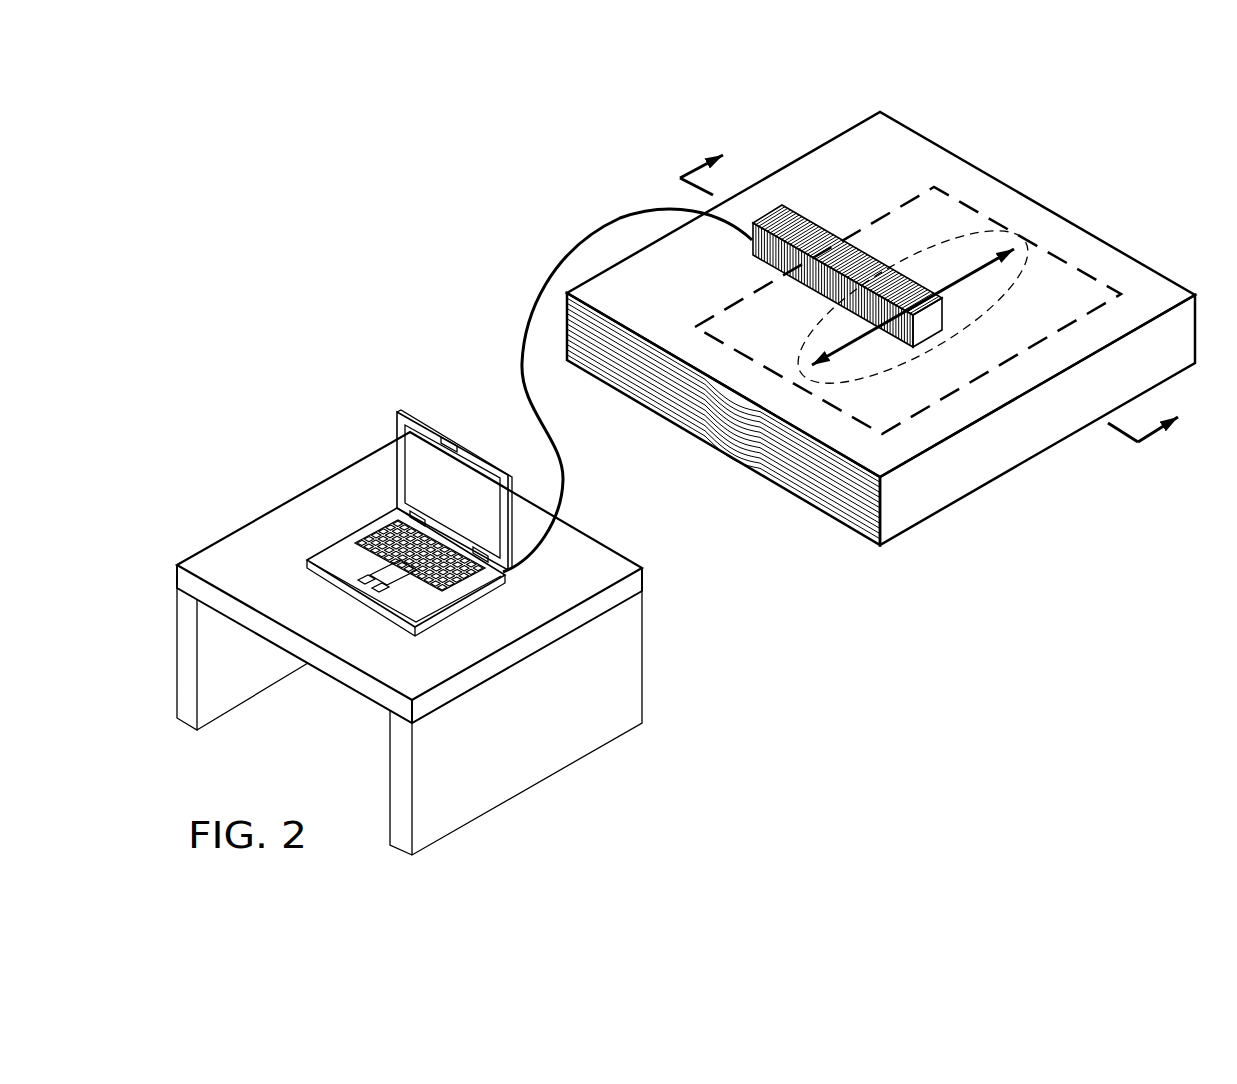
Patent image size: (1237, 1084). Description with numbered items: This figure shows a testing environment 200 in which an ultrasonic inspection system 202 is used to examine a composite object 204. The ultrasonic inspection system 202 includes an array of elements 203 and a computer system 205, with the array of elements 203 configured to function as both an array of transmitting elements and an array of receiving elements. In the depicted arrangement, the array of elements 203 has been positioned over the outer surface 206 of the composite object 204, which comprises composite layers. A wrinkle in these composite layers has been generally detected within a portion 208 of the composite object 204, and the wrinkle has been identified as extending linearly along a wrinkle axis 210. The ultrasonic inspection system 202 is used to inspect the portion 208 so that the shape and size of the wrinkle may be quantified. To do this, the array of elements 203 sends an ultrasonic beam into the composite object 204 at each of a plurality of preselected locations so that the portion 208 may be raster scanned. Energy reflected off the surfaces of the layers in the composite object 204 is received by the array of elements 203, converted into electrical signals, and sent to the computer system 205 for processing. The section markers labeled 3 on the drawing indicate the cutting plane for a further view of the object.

The testing environment 200 is at (899, 683).
The ultrasonic inspection system 202 is at (833, 217).
The array of elements 203 is at (752, 252).
The composite object 204 is at (1153, 272).
The computer system 205 is at (433, 430).
The outer surface 206 is at (998, 195).
The portion 208 is at (1062, 262).
The wrinkle axis 210 is at (982, 273).
The section line for FIG. 3 is at (941, 284).